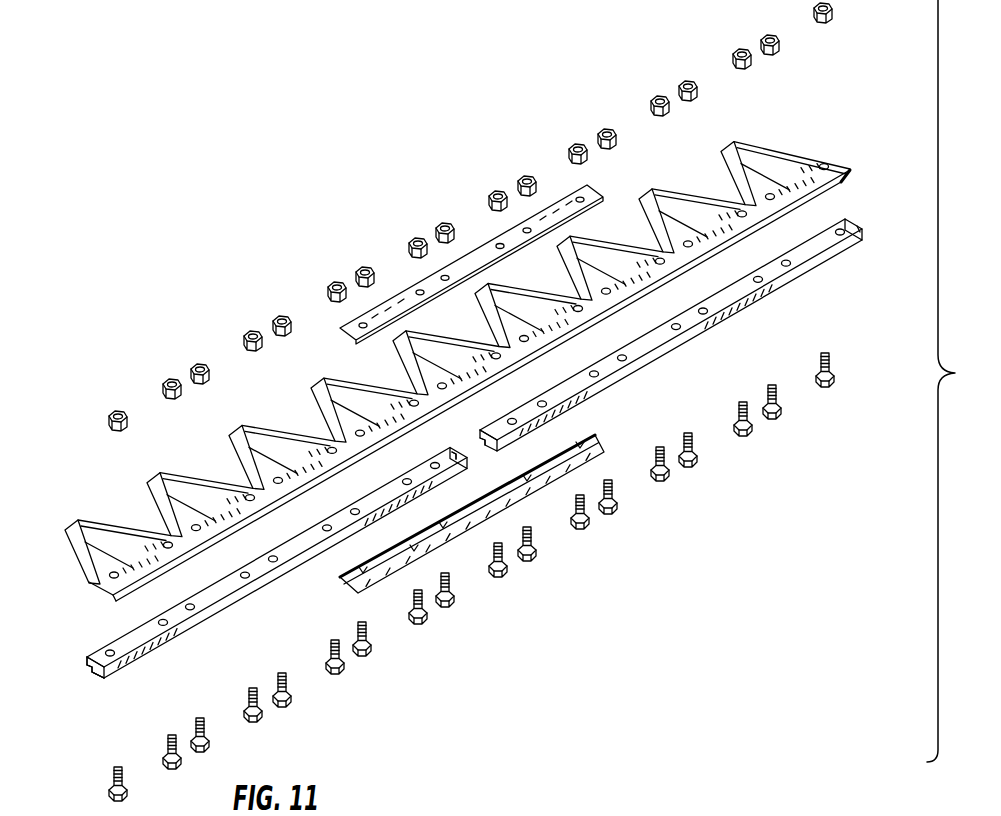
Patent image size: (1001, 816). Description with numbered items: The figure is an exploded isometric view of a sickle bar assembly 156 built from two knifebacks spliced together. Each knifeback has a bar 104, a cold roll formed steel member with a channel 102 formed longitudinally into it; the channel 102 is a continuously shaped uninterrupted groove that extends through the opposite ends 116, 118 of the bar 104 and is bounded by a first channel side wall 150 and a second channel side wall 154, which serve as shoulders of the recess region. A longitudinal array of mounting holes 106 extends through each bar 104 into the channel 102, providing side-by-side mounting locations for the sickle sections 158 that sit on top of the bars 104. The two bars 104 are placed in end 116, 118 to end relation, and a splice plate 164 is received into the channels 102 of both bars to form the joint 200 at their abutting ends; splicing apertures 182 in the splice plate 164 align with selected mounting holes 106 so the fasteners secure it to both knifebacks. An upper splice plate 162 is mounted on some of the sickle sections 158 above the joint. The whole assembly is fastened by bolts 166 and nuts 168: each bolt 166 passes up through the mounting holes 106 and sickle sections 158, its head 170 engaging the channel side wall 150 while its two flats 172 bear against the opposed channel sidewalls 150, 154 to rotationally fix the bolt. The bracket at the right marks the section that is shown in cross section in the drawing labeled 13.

The cutter bar assembly 13 is at (828, 814).
The channel 102 is at (86, 688).
The bar 104 is at (196, 622).
The mounting holes 106 is at (432, 475).
The end 116 is at (93, 652).
The end 118 is at (458, 436).
The first channel side wall 150 is at (99, 680).
The second channel side wall 154 is at (86, 668).
The sickle bar assembly 156 is at (380, 168).
The sickle sections 158 is at (290, 448).
The upper splice plate 162 is at (572, 198).
The splice plate 164 is at (600, 442).
The bolts 166 is at (587, 516).
The nuts 168 is at (825, 25).
The head 170 is at (708, 455).
The flats 172 is at (690, 470).
The splicing apertures 182 is at (410, 555).
The joint 200 is at (486, 459).